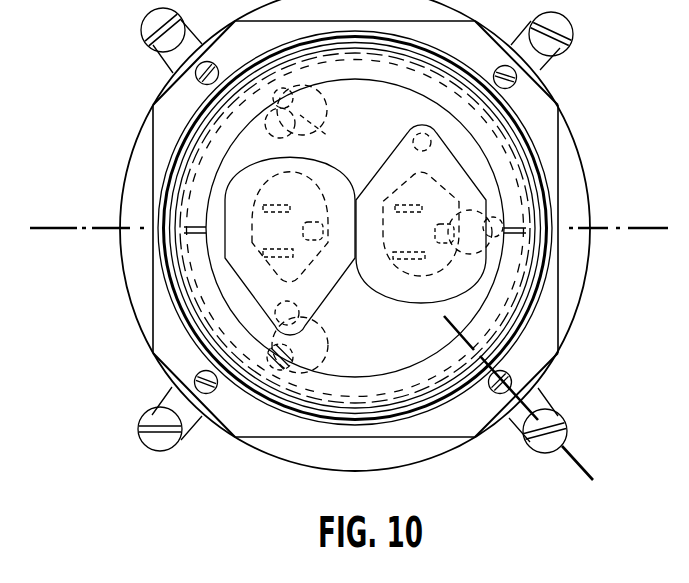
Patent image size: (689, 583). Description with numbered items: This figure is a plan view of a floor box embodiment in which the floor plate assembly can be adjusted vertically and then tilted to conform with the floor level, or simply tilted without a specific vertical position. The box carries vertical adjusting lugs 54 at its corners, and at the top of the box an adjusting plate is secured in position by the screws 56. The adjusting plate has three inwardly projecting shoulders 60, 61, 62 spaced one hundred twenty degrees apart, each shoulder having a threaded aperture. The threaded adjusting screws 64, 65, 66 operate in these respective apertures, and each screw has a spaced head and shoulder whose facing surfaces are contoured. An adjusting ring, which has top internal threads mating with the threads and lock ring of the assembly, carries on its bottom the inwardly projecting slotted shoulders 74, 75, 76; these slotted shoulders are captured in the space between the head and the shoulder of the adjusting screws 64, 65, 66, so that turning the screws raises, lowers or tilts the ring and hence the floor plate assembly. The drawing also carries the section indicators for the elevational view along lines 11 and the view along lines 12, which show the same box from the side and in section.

The vertical adjusting lugs 54 is at (155, 443).
The screws 56 is at (210, 392).
The inwardly projecting shoulder 60 is at (434, 238).
The inwardly projecting shoulder 61 is at (328, 136).
The inwardly projecting shoulder 62 is at (322, 328).
The threaded adjusting screw 64 is at (522, 270).
The threaded adjusting screw 65 is at (283, 144).
The threaded adjusting screw 66 is at (281, 371).
The inwardly projecting slotted shoulder 74 is at (466, 212).
The inwardly projecting slotted shoulder 75 is at (328, 107).
The inwardly projecting slotted shoulder 76 is at (246, 322).
The section line 12— 12 is at (447, 339).
The section line 11— 11 is at (50, 240).